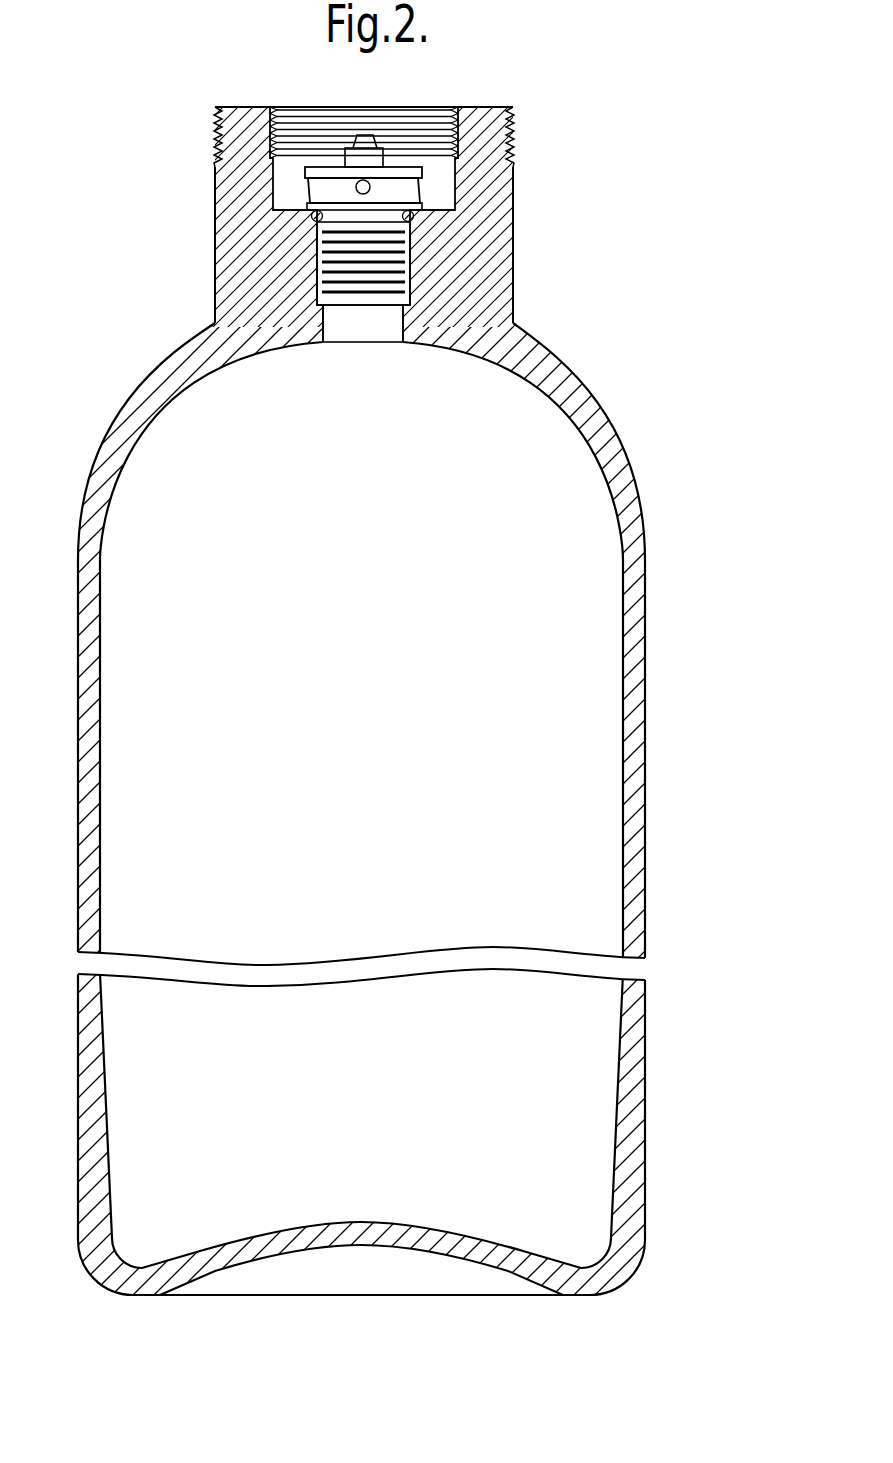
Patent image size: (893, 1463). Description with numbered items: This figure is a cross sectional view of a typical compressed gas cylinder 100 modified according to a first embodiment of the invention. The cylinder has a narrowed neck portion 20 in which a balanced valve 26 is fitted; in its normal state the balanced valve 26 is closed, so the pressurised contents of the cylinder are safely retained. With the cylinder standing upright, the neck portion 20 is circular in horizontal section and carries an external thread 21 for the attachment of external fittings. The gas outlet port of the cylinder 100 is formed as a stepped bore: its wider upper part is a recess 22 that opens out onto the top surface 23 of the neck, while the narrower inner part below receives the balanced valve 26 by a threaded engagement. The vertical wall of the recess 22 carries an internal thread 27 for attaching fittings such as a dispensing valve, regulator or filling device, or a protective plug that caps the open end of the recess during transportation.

The compressed gas cylinder 100 is at (664, 687).
The neck portion 20 is at (503, 192).
The external thread 21 is at (214, 124).
The recess 22 is at (432, 117).
The top surface 23 is at (248, 106).
The balanced valve 26 is at (317, 252).
The internal thread 27 is at (283, 150).